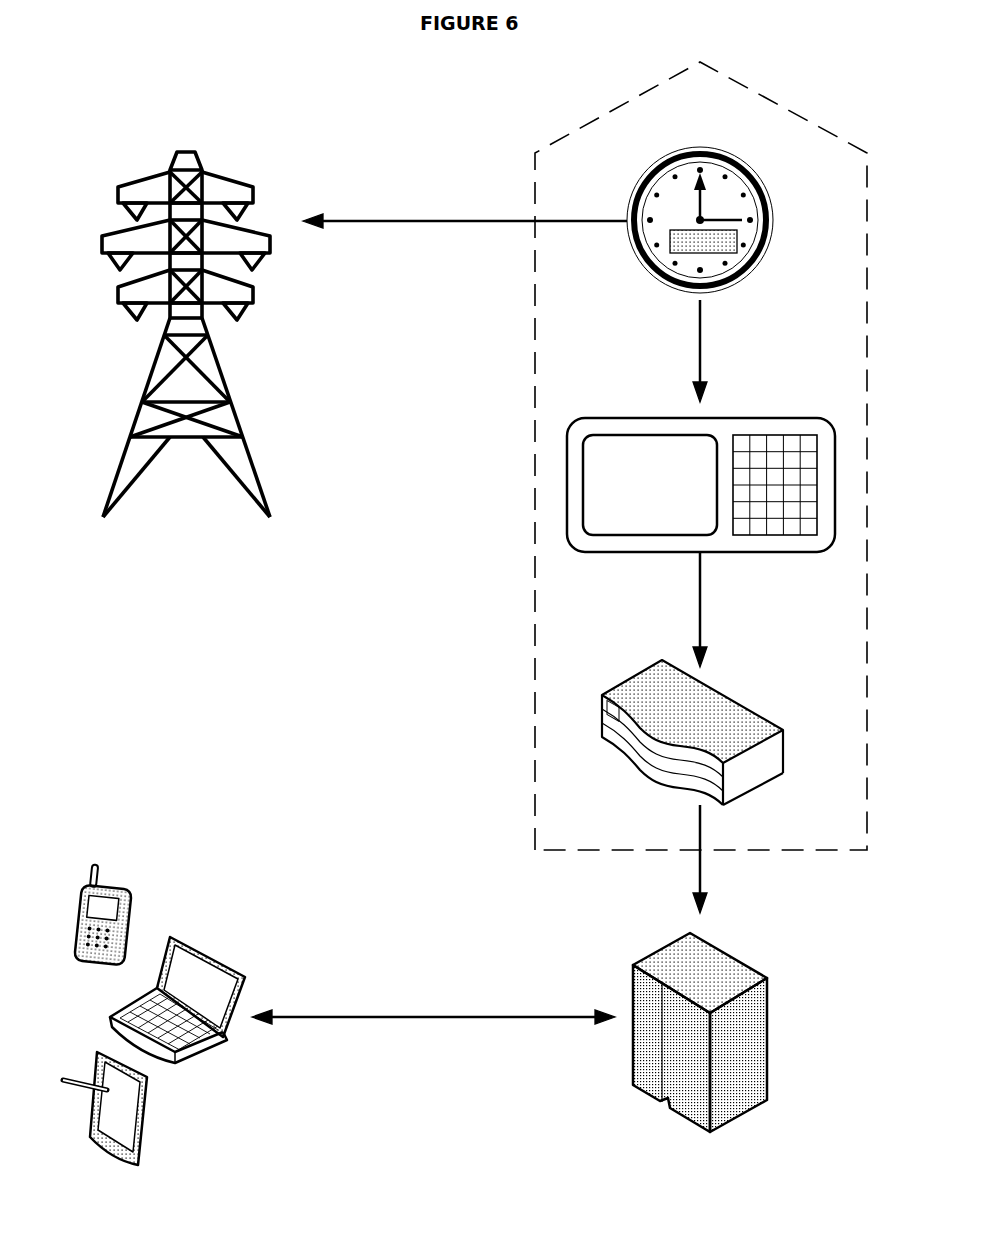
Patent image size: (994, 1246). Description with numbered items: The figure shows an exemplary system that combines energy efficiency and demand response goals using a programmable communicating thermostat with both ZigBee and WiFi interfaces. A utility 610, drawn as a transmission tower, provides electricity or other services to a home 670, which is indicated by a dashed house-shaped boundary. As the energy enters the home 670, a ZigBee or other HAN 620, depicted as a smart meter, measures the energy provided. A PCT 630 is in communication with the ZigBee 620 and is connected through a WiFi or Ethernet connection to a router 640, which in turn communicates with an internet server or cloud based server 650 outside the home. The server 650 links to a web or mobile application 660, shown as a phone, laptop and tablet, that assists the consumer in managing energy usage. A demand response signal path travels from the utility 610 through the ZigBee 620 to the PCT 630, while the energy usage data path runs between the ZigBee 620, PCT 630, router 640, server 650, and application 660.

The utility 610 is at (147, 470).
The ZigBee or other HAN 620 is at (630, 247).
The PCT 630 is at (701, 485).
The router 640 is at (645, 667).
The internet server or cloud based server 650 is at (648, 955).
The web or mobile application 660 is at (232, 937).
The home 670 is at (718, 72).